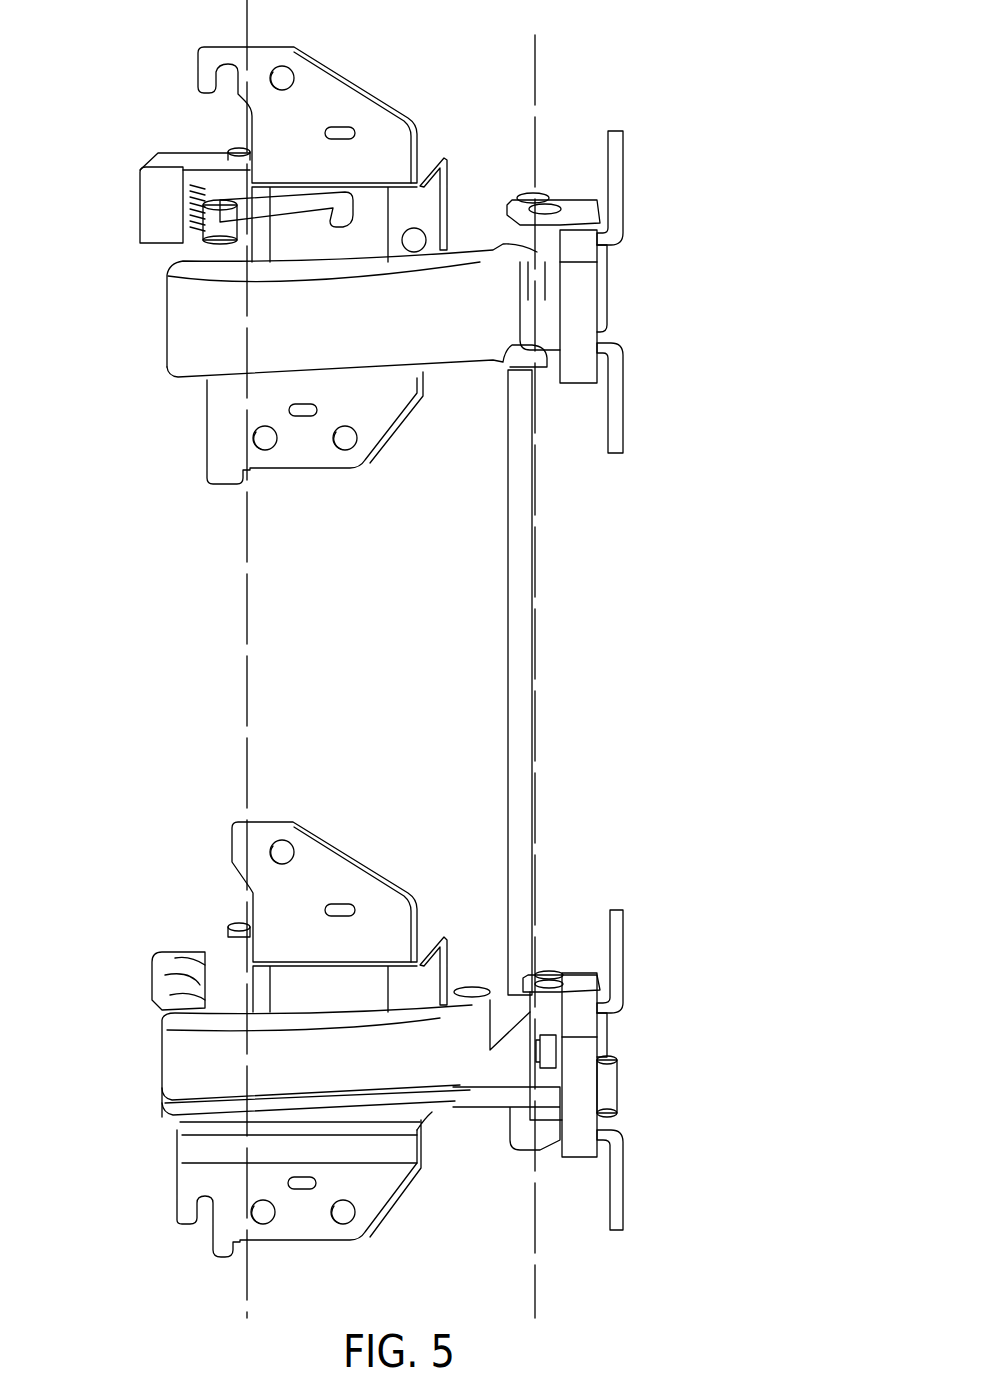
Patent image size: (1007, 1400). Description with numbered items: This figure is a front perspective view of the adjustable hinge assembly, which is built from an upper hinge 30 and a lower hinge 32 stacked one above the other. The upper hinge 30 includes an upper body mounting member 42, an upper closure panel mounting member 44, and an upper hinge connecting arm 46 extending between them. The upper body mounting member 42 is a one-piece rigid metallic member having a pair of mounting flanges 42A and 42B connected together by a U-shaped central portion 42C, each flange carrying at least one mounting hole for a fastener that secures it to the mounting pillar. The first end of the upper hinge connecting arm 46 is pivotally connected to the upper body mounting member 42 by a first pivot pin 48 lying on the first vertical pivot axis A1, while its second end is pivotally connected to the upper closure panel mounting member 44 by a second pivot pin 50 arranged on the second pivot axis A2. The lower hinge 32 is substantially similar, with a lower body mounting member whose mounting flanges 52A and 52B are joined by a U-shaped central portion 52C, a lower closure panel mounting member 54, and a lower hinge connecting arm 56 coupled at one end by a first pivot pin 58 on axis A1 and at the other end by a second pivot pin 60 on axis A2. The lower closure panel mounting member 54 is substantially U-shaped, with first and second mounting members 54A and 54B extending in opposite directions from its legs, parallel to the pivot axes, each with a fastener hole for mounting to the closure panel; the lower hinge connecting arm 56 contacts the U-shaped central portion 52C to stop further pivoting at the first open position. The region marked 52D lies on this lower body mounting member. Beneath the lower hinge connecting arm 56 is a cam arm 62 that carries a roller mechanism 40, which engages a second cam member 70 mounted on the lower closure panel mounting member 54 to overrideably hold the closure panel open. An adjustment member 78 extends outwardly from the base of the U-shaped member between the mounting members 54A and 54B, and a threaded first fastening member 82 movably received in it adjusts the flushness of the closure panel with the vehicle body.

The first vertical pivot axis A1 is at (247, 12).
The second pivot axis A2 is at (538, 68).
The upper hinge 30 is at (685, 283).
The lower hinge 32 is at (685, 1045).
The roller mechanism 40 is at (617, 1095).
The upper body mounting member 42 is at (205, 441).
The mounting flange 42A is at (267, 47).
The mounting flange 42B is at (305, 470).
The U-shaped central portion 42C is at (413, 208).
The upper closure panel mounting member 44 is at (628, 165).
The upper hinge connecting arm 46 is at (160, 307).
The first pivot pin 48 is at (240, 148).
The second pivot pin 50 is at (540, 193).
The mounting flange 52A is at (328, 843).
The mounting flange 52B is at (385, 1208).
The U-shaped central portion 52C is at (445, 973).
The latch portion of lower bracket 52D is at (168, 988).
The lower closure panel mounting member 54 is at (632, 965).
The first mounting member 54A is at (627, 933).
The second mounting member 54B is at (624, 1208).
The lower hinge connecting arm 56 is at (158, 1052).
The first pivot pin 58 is at (232, 946).
The second pivot pin 60 is at (543, 965).
The cam arm 62 is at (177, 1112).
The second cam member 70 is at (548, 1120).
The adjustment member 78 is at (548, 1052).
The first fastening member 82 is at (533, 1047).